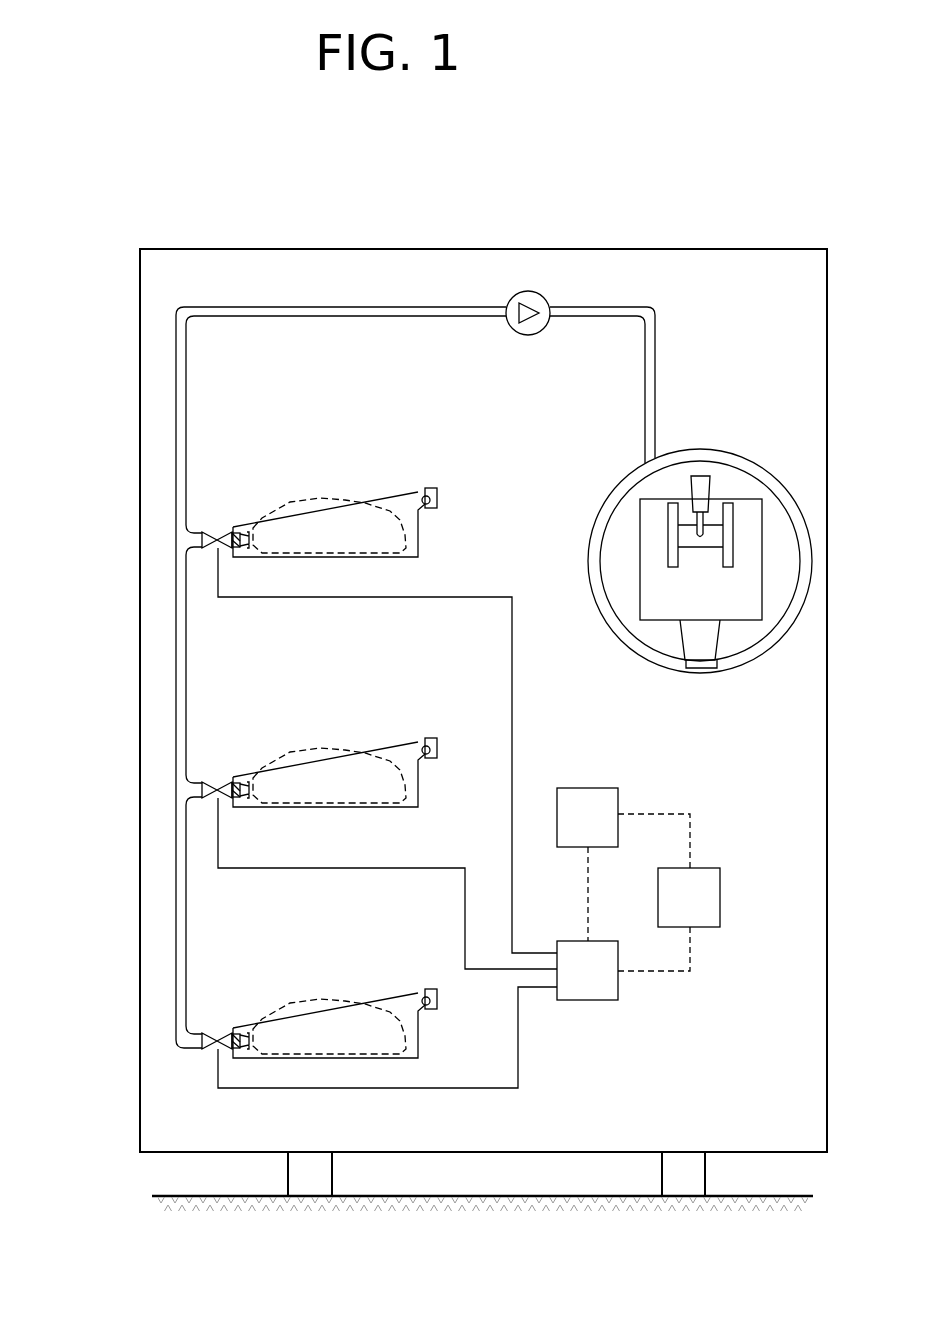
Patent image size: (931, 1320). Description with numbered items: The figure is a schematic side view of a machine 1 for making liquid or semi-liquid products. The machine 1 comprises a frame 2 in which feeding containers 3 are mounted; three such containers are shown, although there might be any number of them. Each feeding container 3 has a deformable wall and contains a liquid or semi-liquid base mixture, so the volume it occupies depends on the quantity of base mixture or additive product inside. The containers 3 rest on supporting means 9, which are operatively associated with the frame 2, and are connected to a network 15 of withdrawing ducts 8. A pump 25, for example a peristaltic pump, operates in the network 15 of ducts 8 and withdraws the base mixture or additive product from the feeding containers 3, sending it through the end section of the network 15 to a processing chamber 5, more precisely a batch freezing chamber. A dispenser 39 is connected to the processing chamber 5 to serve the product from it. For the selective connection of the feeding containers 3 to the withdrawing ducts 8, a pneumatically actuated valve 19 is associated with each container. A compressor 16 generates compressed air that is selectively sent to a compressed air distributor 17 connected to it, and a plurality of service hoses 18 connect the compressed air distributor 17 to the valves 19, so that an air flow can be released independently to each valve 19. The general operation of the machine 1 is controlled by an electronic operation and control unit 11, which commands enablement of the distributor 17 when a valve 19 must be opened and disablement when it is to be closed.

The machine 1 is at (688, 220).
The frame 2 is at (328, 245).
The feeding container 3 is at (334, 487).
The processing chamber 5 is at (583, 527).
The withdrawing duct 8 is at (235, 306).
The supporting means 9 is at (428, 531).
The operation and control unit 11 is at (677, 911).
The network of withdrawing ducts 15 is at (403, 305).
The compressor 16 is at (576, 831).
The compressed air distributor 17 is at (576, 984).
The service hose 18 is at (518, 939).
The pneumatically actuated valve 19 is at (212, 550).
The pump 25 is at (528, 290).
The dispenser 39 is at (695, 604).